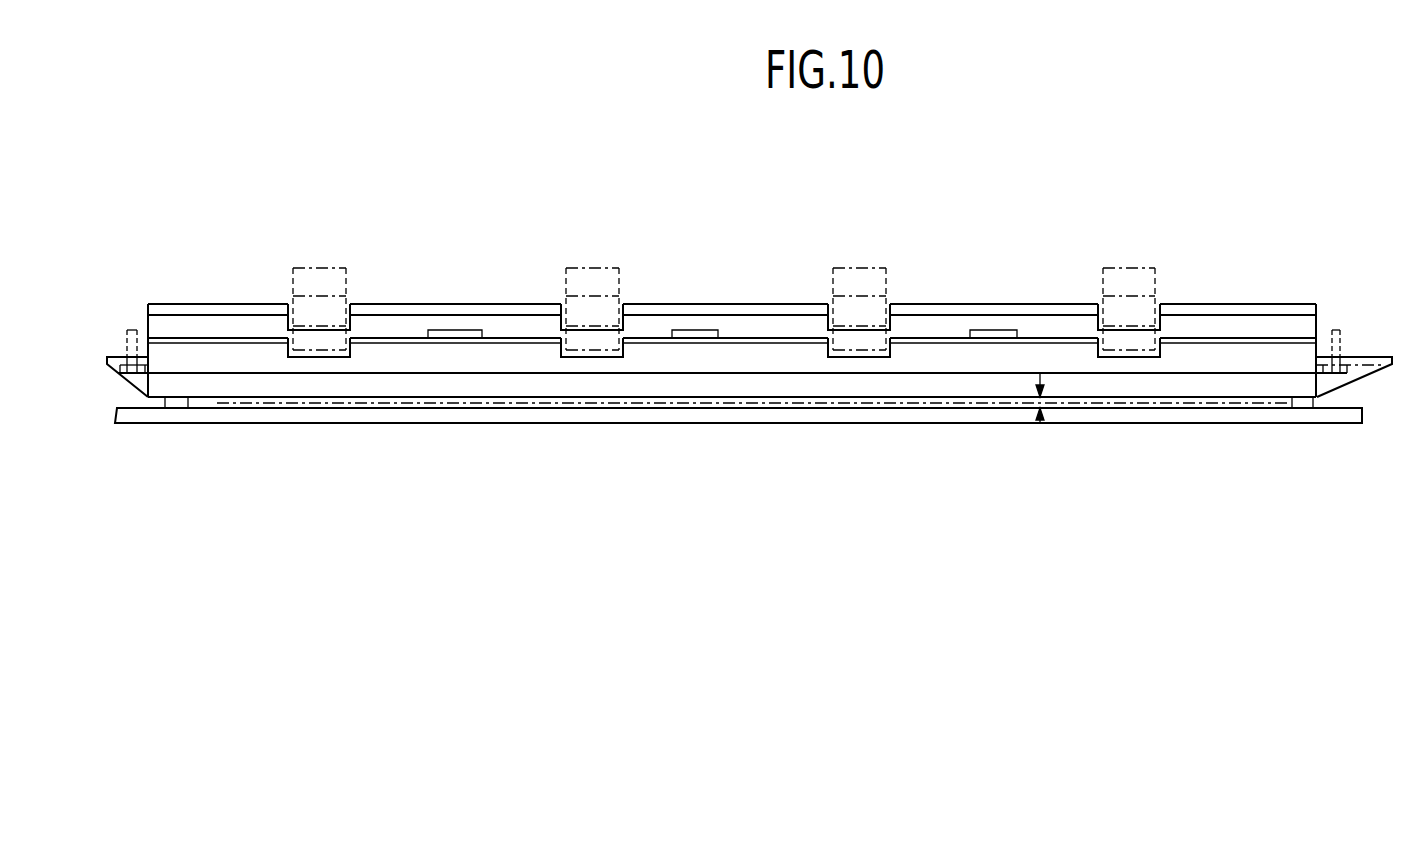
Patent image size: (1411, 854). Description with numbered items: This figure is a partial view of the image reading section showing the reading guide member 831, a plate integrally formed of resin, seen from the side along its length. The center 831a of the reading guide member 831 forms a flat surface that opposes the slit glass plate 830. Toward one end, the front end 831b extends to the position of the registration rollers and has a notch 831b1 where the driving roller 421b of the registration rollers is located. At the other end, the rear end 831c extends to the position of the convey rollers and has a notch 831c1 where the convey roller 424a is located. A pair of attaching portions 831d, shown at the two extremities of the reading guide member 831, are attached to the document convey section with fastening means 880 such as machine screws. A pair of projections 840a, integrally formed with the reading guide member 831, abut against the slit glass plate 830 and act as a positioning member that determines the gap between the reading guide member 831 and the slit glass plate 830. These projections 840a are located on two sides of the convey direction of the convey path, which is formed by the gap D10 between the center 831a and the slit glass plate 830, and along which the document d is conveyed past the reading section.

The reading guide member 831 is at (1281, 218).
The center 831a is at (713, 385).
The front end 831b is at (766, 323).
The notch 831b1 is at (317, 328).
The rear end 831c is at (654, 353).
The notch 831c1 is at (302, 357).
The attaching portions 831d is at (120, 412).
The fastening means 880 is at (131, 330).
The roller 421b is at (351, 261).
The convey roller 424a is at (323, 365).
The projections 840a is at (177, 406).
The slit glass plate 830 is at (965, 413).
The document d is at (450, 410).
The gap D10 is at (1042, 399).